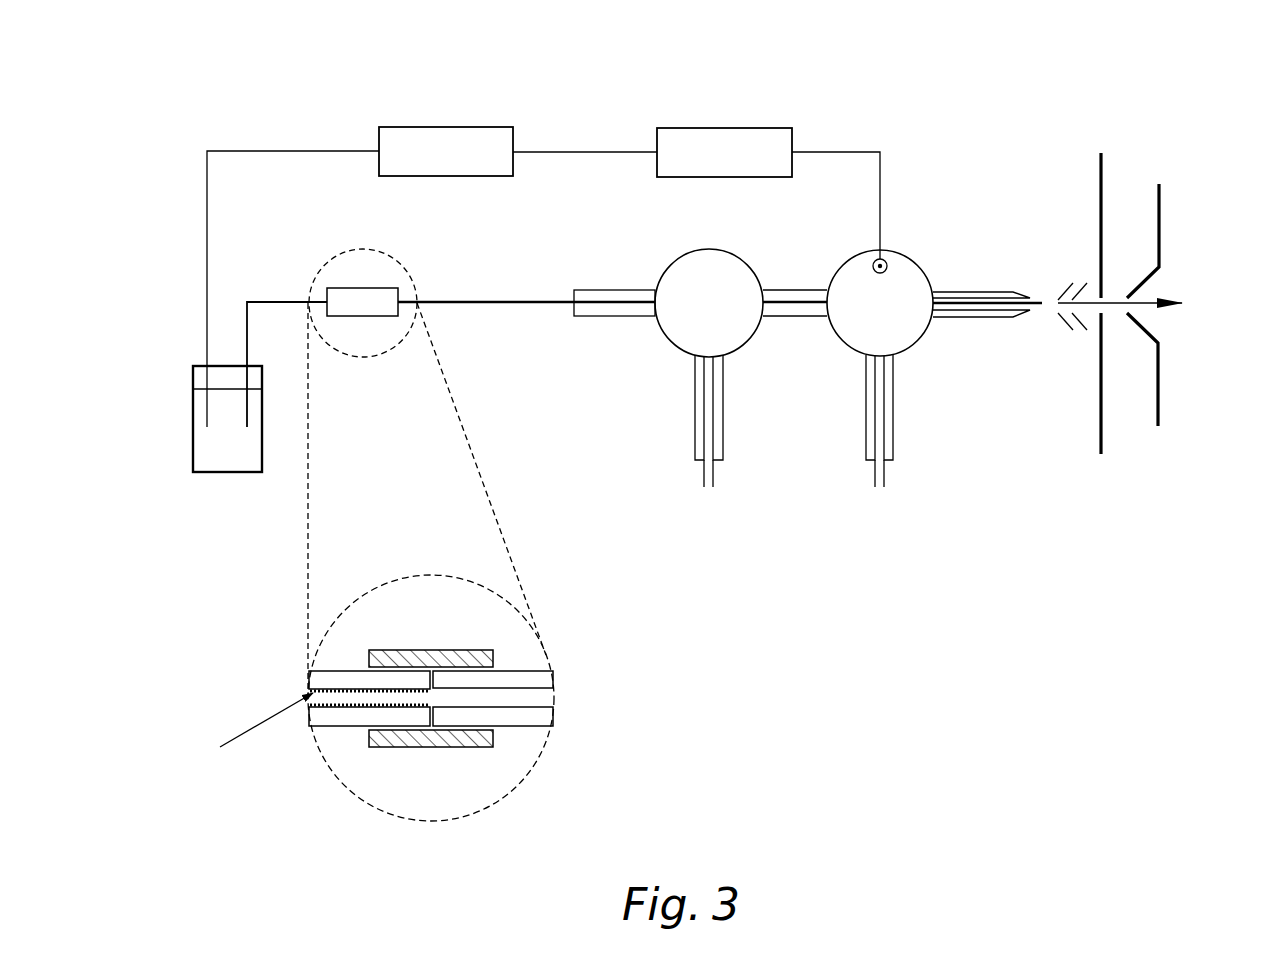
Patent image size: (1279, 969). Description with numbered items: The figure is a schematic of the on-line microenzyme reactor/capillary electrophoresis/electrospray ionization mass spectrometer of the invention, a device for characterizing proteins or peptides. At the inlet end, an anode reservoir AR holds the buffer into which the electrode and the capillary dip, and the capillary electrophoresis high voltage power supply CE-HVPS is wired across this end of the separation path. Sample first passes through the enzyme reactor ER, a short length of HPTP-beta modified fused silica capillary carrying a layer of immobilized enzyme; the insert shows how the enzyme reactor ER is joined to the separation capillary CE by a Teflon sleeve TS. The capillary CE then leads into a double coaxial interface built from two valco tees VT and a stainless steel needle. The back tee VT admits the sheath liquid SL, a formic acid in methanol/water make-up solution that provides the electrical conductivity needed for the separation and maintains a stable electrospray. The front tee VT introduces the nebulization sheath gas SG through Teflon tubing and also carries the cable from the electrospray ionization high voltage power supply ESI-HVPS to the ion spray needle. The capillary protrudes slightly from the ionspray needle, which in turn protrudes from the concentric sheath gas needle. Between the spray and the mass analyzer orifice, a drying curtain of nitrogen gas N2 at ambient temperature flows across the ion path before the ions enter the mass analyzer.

The capillary electrophoresis high voltage power supply CE-HVPS is at (432, 274).
The electrospray ionization high voltage power supply ESI-HVPS is at (752, 197).
The enzyme reactor ER is at (287, 352).
The anode reservoir AR is at (210, 419).
The Teflon sleeve TS is at (329, 535).
The capillary CE is at (612, 297).
The valco tee VT is at (848, 303).
The sheath liquid SL is at (709, 500).
The sheath gas SG is at (880, 500).
The nitrogen gas N2 is at (1132, 167).